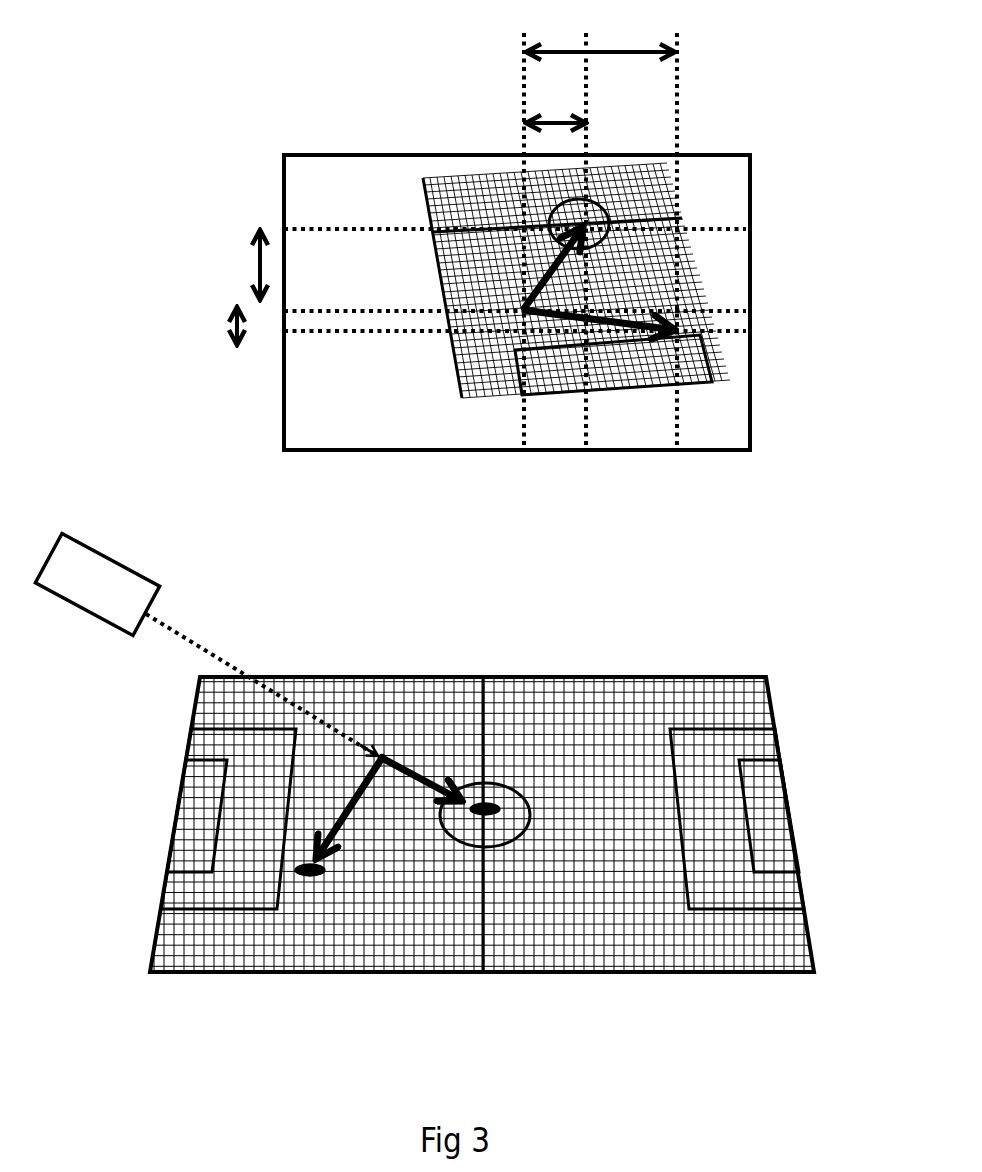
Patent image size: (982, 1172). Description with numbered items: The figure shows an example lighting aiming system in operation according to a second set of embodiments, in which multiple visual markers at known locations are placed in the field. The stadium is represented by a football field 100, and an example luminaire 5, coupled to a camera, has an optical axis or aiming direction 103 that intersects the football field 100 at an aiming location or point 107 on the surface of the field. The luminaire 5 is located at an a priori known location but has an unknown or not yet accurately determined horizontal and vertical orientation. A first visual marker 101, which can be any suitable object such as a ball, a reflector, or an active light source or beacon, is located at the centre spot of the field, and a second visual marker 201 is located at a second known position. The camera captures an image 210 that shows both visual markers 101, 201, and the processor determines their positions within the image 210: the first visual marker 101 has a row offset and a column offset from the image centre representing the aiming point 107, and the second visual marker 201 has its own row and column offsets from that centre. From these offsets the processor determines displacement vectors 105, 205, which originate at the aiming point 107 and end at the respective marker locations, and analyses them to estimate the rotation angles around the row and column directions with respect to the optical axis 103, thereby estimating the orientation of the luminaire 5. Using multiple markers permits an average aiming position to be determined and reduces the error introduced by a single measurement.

The image 210 is at (762, 430).
The football field 100 is at (733, 672).
The visual marker 101 is at (499, 802).
The optical axis or aiming direction 103 is at (205, 645).
The vector line 105 is at (428, 774).
The aiming location or point 107 is at (381, 754).
The second visual marker 201 is at (306, 880).
The displacement vector 205 is at (365, 823).
The luminaire 5 is at (97, 585).